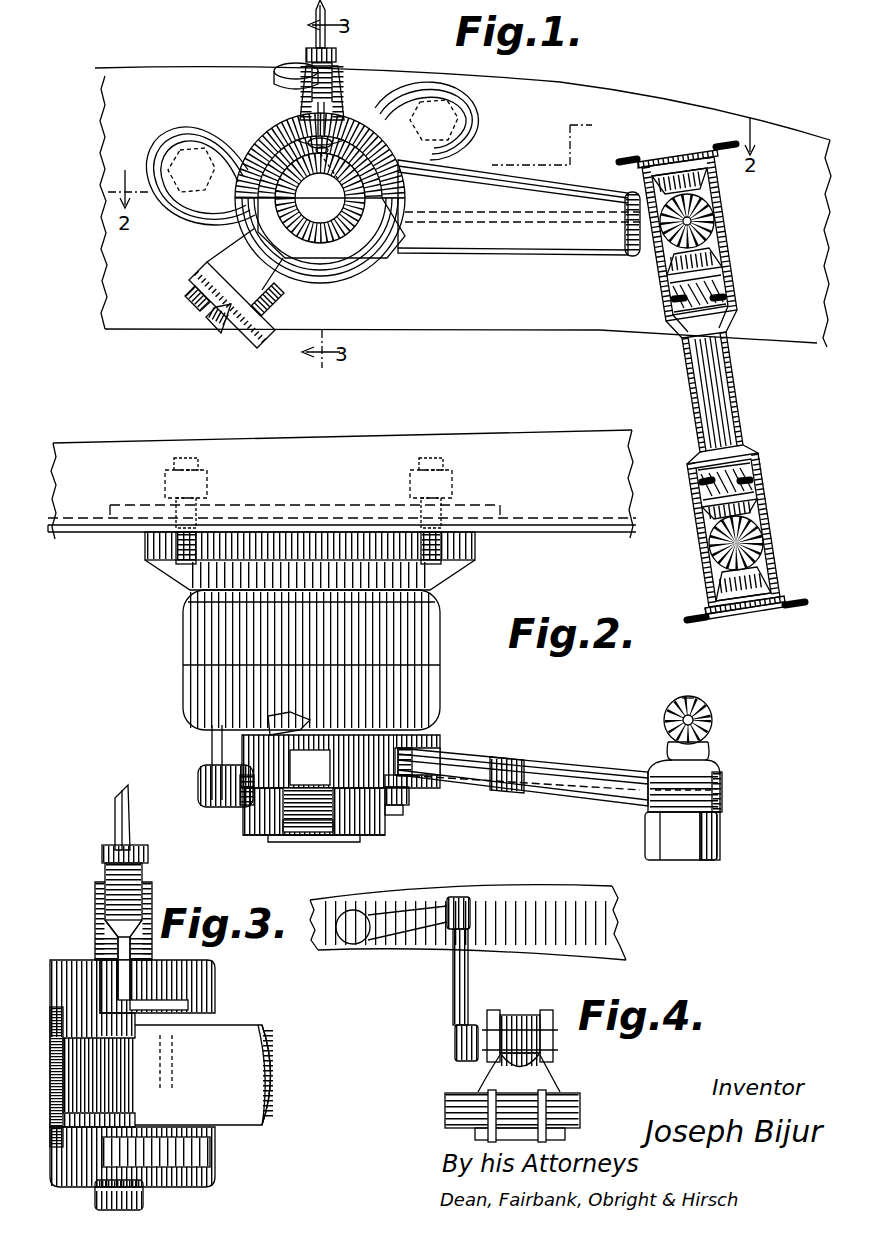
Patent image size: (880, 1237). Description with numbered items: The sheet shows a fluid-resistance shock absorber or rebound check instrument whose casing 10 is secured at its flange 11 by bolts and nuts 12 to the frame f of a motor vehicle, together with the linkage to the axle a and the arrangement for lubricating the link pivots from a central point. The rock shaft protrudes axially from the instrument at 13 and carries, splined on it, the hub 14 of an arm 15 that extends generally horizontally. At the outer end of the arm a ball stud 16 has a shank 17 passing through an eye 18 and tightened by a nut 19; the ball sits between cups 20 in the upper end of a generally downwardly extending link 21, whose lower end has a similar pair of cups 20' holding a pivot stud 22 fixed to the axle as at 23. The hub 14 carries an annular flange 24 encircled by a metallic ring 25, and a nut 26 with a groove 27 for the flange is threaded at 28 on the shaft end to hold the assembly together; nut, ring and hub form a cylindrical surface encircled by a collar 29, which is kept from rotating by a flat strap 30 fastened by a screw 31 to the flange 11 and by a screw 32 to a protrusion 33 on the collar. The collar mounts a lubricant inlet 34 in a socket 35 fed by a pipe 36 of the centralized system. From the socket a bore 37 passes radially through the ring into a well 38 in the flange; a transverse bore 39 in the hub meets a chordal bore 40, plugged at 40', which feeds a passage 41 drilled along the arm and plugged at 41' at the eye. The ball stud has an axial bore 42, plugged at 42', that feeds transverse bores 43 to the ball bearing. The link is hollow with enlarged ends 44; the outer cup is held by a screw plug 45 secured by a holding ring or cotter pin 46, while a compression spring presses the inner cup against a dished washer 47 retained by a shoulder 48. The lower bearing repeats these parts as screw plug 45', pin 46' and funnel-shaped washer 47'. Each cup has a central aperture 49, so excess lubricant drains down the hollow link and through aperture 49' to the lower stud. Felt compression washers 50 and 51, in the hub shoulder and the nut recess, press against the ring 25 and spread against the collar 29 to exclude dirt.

In FIG. 1, the frame f is at (604, 318).
In FIG. 2, the frame f is at (518, 442).
In FIG. 4, the frame f is at (612, 938).
In FIG. 2, the casing 10 is at (422, 650).
In FIG. 4, the casing 10 is at (352, 932).
In FIG. 2, the flange 11 is at (468, 548).
In FIG. 2, the bolts and nuts 12 is at (188, 468).
In FIG. 2, the rock shaft 13 is at (330, 834).
In FIG. 3, the rock shaft 13 is at (244, 1040).
In FIG. 2, the hub 14 is at (372, 745).
In FIG. 3, the hub 14 is at (212, 1168).
In FIG. 1, the arm 15 is at (548, 236).
In FIG. 2, the arm 15 is at (536, 772).
In FIG. 4, the arm 15 is at (400, 926).
In FIG. 2, the ball stud 16 is at (706, 716).
In FIG. 2, the shank 17 is at (655, 834).
In FIG. 2, the eye 18 is at (652, 775).
In FIG. 2, the nut 19 is at (708, 846).
In FIG. 1, the ball cups 20 is at (714, 221).
In FIG. 1, the lower ball cups 20' is at (770, 546).
In FIG. 1, the link 21 is at (742, 384).
In FIG. 4, the link 21 is at (455, 985).
In FIG. 1, the pivot stud 22 is at (758, 542).
In FIG. 4, the axle attachment 23 is at (480, 1040).
In FIG. 1, the annular flange 24 is at (428, 212).
In FIG. 2, the annular flange 24 is at (276, 840).
In FIG. 3, the annular flange 24 is at (185, 1165).
In FIG. 1, the metallic ring 25 is at (420, 184).
In FIG. 2, the metallic ring 25 is at (244, 800).
In FIG. 3, the metallic ring 25 is at (143, 1200).
In FIG. 2, the nut 26 is at (362, 826).
In FIG. 3, the nut 26 is at (70, 975).
In FIG. 3, the groove 27 is at (54, 1111).
In FIG. 2, the threads 28 is at (303, 834).
In FIG. 3, the threads 28 is at (130, 1090).
In FIG. 1, the collar 29 is at (440, 128).
In FIG. 2, the collar 29 is at (408, 800).
In FIG. 3, the collar 29 is at (97, 1200).
In FIG. 1, the strap 30 is at (270, 320).
In FIG. 2, the strap 30 is at (210, 742).
In FIG. 1, the screw 31 is at (252, 318).
In FIG. 1, the screw 32 is at (222, 318).
In FIG. 1, the protrusion 33 is at (232, 262).
In FIG. 1, the lubricant inlet 34 is at (336, 72).
In FIG. 1, the socket 35 is at (338, 106).
In FIG. 1, the pipe 36 is at (312, 24).
In FIG. 3, the pipe 36 is at (130, 820).
In FIG. 1, the bore 37 is at (372, 118).
In FIG. 3, the bore 37 is at (160, 975).
In FIG. 1, the well 38 is at (440, 162).
In FIG. 3, the well 38 is at (112, 985).
In FIG. 1, the bore 39 is at (292, 142).
In FIG. 3, the bore 39 is at (217, 983).
In FIG. 1, the bore 40 is at (435, 164).
In FIG. 3, the bore 40 is at (194, 995).
In FIG. 1, the plug 40' is at (270, 92).
In FIG. 1, the passage 41 is at (634, 245).
In FIG. 2, the passage 41 is at (433, 749).
In FIG. 2, the plug 41' is at (743, 798).
In FIG. 2, the axial bore 42 is at (718, 735).
In FIG. 2, the plug 42' is at (709, 684).
In FIG. 2, the transverse bores 43 is at (672, 726).
In FIG. 1, the enlargement 44 is at (770, 490).
In FIG. 1, the screw plug 45 is at (703, 235).
In FIG. 1, the screw plug 45' is at (756, 622).
In FIG. 1, the holding ring or cotter pin 46 is at (704, 221).
In FIG. 1, the holding ring or cotter pin 46' is at (766, 528).
In FIG. 1, the dished washer 47 is at (723, 315).
In FIG. 1, the funnel shaped washer 47' is at (760, 423).
In FIG. 1, the shoulder 48 is at (680, 322).
In FIG. 1, the aperture 49 is at (725, 271).
In FIG. 1, the aperture 49' is at (709, 552).
In FIG. 2, the compression washer 50 is at (405, 786).
In FIG. 2, the compression washer 51 is at (392, 815).
In FIG. 4, the axle a is at (526, 1030).